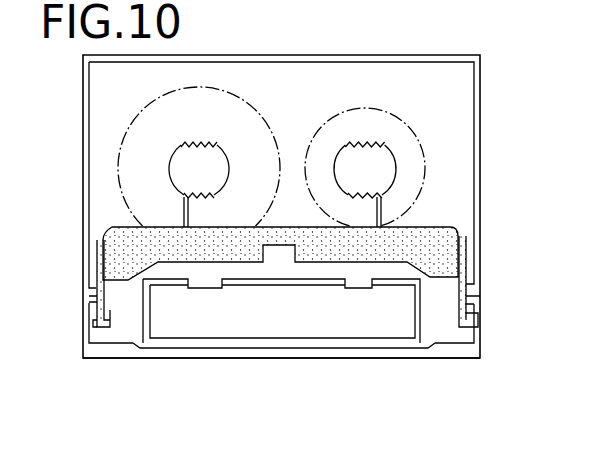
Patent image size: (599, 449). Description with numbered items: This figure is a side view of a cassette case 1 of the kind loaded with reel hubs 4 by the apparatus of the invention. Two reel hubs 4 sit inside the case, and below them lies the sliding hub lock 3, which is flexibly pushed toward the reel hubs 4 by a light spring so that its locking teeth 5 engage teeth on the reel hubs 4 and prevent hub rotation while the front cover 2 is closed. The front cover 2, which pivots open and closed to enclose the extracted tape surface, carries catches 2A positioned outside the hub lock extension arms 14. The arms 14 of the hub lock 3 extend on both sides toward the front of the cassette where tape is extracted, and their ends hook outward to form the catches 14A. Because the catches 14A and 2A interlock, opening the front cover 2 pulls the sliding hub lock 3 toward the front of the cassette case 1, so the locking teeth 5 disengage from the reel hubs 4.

The cassette case 1 is at (328, 62).
The front cover 2 is at (248, 354).
The catches 2A is at (88, 299).
The sliding hub lock 3 is at (285, 228).
The reel hubs 4 is at (207, 143).
The locking teeth 5 is at (188, 213).
The arms 14 is at (104, 296).
The catches 14A is at (107, 327).